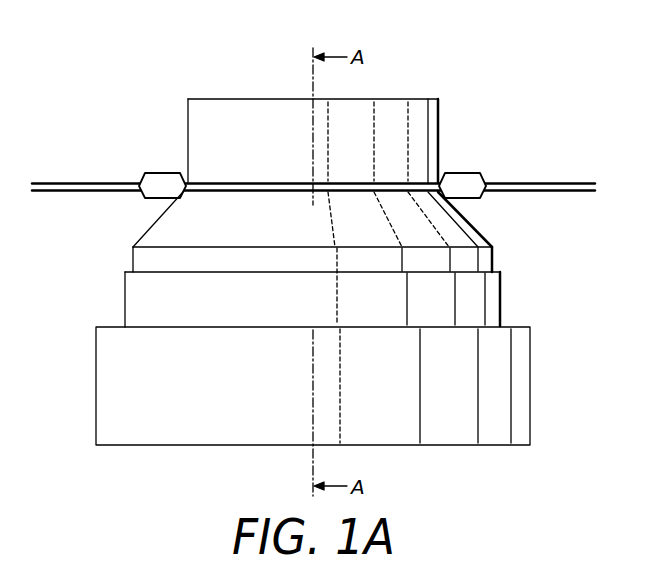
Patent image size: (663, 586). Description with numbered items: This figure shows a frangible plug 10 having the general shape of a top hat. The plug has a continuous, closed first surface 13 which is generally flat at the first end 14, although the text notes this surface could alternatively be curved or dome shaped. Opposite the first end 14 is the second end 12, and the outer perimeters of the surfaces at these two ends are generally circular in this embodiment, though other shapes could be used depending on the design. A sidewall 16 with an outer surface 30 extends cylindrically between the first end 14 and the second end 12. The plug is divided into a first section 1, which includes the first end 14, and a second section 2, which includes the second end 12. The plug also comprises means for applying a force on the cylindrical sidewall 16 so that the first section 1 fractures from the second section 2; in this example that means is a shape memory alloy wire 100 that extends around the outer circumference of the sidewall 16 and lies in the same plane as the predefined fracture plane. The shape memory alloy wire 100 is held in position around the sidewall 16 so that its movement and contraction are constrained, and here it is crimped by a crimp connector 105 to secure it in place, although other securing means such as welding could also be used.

The surge protection device 10 is at (217, 75).
The first section 1 is at (86, 102).
The second section 2 is at (86, 195).
The first surface 13 is at (412, 98).
The first end 14 is at (186, 110).
The shape memory alloy wire 100 is at (257, 182).
The crimp connector 105 is at (471, 172).
The sidewall 16 is at (166, 224).
The outer surface 30 is at (471, 222).
The second end 12 is at (484, 253).